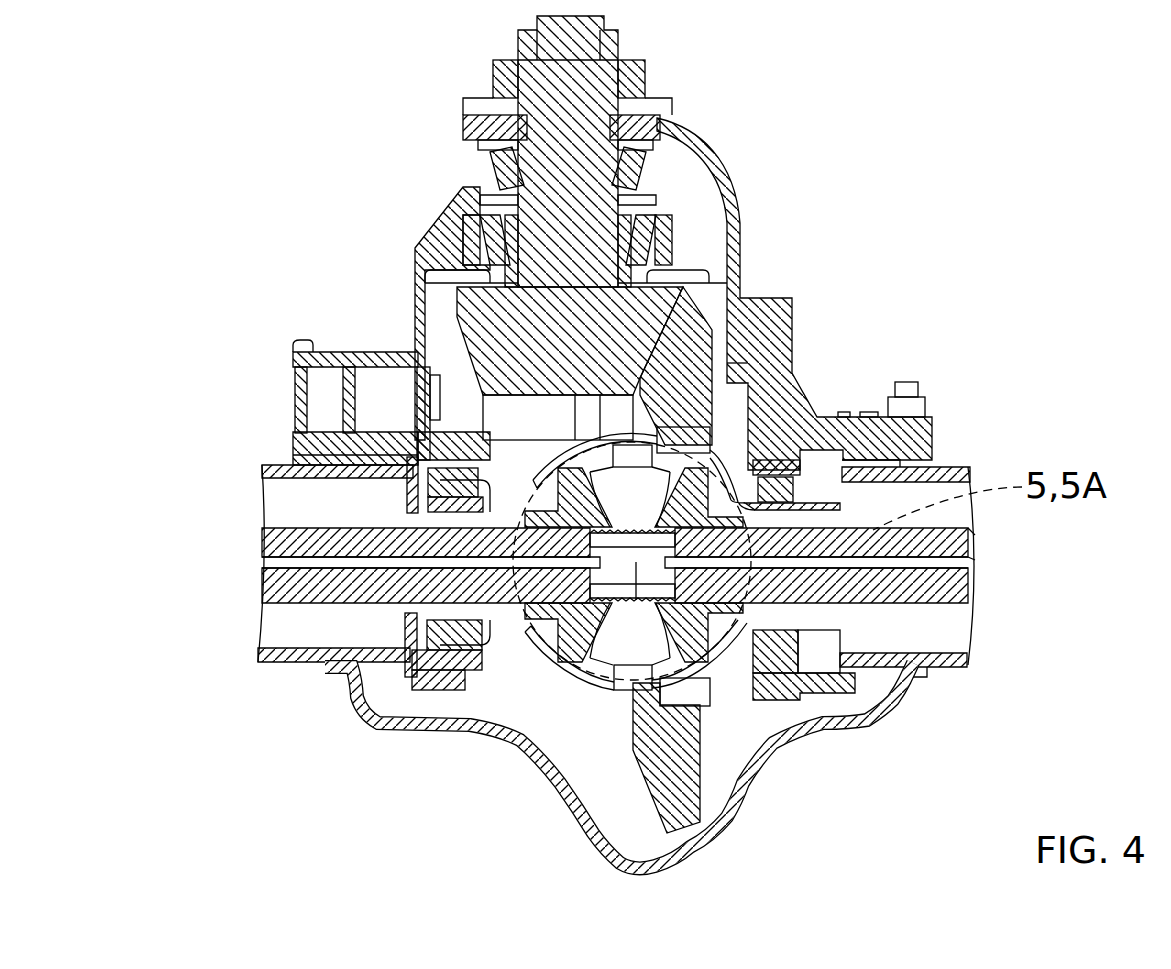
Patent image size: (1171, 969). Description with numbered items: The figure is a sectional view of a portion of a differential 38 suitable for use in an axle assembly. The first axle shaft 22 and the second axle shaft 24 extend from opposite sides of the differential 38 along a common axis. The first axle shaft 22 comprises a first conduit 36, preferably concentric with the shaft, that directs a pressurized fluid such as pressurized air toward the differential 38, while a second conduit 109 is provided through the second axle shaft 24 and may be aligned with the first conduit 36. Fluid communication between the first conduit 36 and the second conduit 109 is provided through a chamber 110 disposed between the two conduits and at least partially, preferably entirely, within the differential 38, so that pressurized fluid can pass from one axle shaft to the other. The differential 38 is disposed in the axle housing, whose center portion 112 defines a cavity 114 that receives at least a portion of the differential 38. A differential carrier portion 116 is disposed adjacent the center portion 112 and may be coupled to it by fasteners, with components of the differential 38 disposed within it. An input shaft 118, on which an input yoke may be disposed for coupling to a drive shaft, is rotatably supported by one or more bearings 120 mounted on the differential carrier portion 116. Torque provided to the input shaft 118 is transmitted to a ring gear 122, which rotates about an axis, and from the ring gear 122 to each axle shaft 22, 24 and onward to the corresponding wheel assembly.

The first axle shaft 22 is at (270, 594).
The second axle shaft 24 is at (980, 597).
The first conduit 36 is at (273, 563).
The differential 38 is at (312, 78).
The second conduit 109 is at (980, 567).
The chamber 110 is at (636, 562).
The center portion 112 is at (466, 790).
The cavity 114 is at (750, 750).
The differential carrier portion 116 is at (435, 443).
The input shaft 118 is at (588, 176).
The bearings 120 is at (668, 250).
The ring gear 122 is at (690, 777).